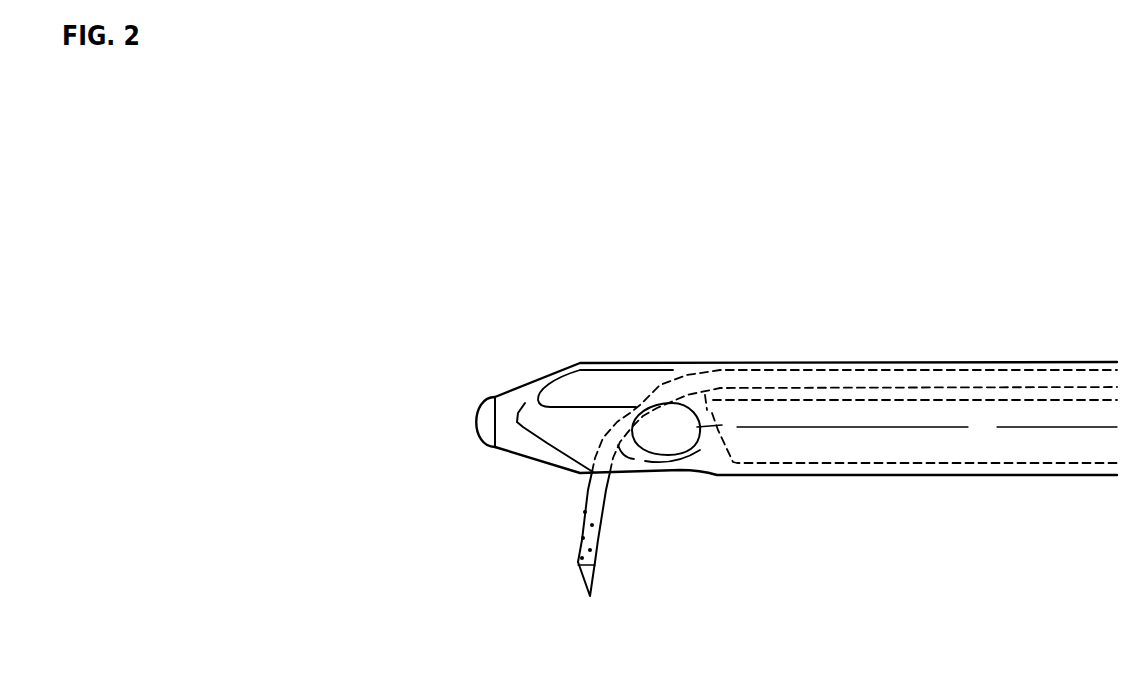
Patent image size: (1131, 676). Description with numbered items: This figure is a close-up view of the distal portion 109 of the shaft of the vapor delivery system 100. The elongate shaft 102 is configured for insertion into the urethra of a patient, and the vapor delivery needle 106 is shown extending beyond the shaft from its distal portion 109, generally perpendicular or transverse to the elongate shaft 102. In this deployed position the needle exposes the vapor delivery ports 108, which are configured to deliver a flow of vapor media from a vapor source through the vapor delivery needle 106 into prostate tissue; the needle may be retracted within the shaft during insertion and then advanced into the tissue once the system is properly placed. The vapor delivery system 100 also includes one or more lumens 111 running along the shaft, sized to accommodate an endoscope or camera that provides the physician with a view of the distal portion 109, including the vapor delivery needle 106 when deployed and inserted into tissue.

The vapor delivery system 100 is at (938, 207).
The elongate shaft 102 is at (578, 363).
The vapor delivery needle 106 is at (598, 540).
The vapor delivery ports 108 is at (578, 563).
The distal portion 109 is at (445, 293).
The lumens 111 is at (918, 438).